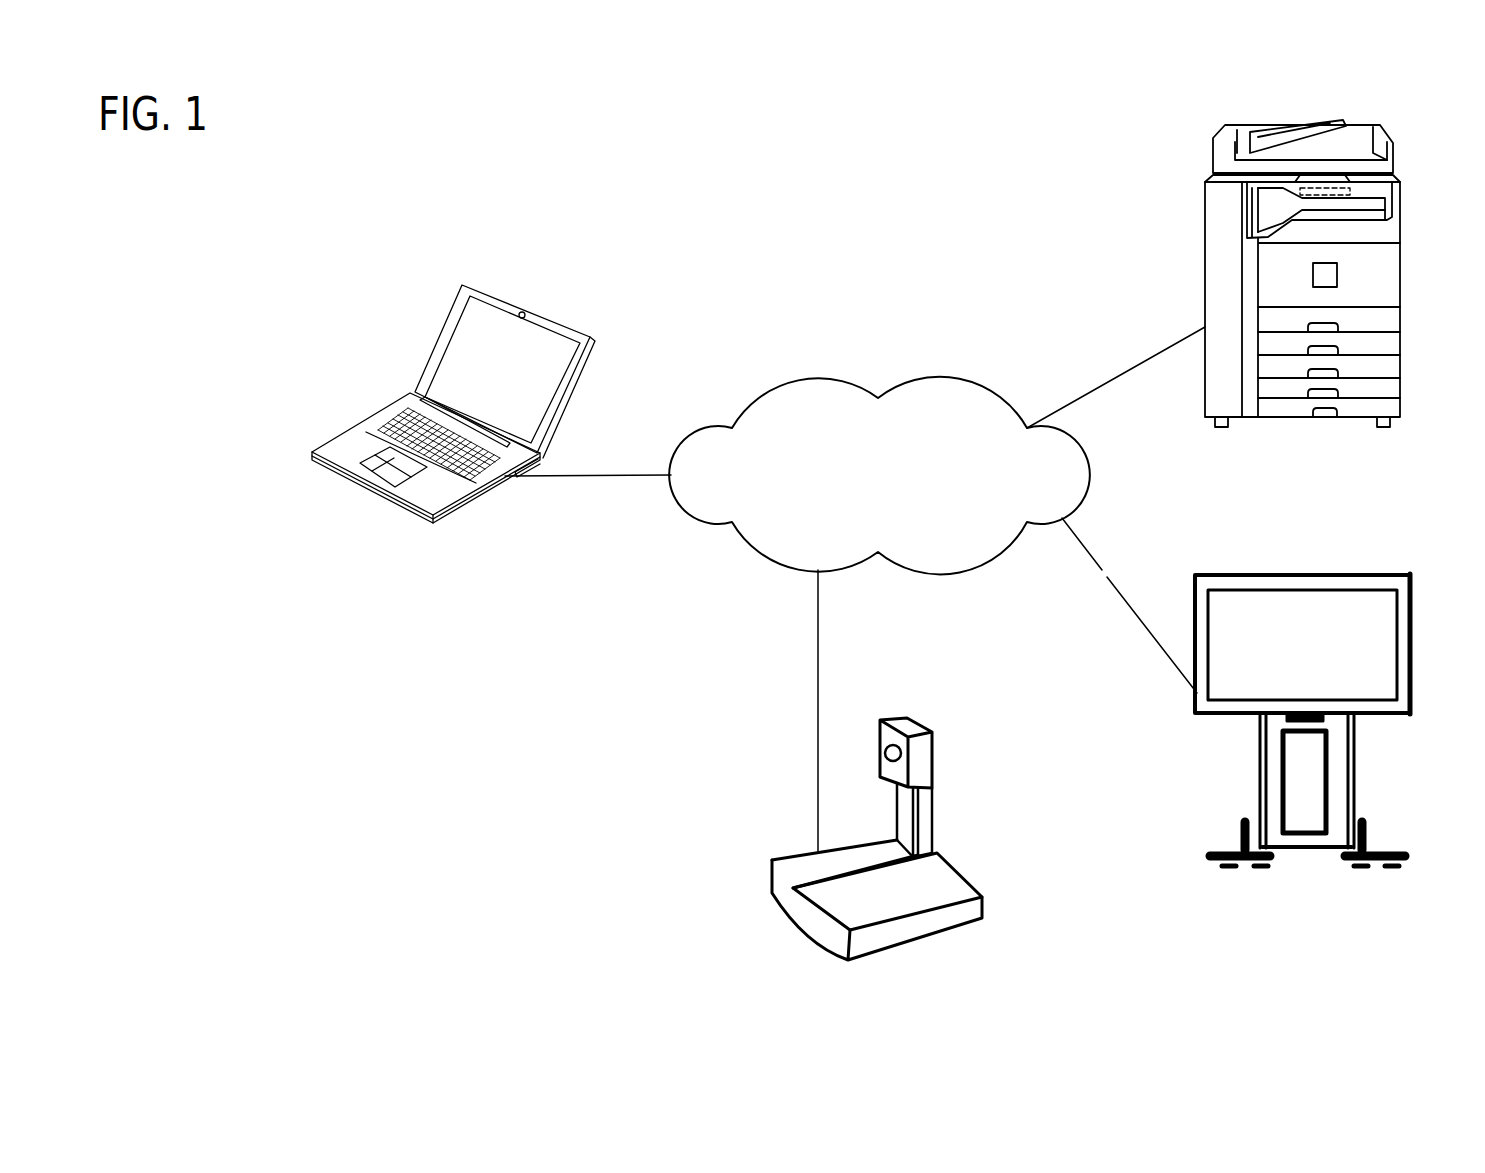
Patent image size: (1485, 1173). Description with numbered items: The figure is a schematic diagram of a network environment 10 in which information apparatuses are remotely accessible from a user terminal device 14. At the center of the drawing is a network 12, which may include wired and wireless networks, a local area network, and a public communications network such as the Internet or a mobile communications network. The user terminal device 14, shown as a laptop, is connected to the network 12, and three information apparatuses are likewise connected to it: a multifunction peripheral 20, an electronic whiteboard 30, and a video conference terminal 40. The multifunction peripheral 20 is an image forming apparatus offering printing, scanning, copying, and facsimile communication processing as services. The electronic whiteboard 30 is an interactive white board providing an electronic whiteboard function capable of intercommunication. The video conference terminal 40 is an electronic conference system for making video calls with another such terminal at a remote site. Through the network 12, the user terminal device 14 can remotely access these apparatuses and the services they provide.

The network environment 10 is at (303, 173).
The network 12 is at (957, 380).
The user terminal device 14 is at (452, 510).
The multifunction peripheral 20 is at (1398, 310).
The electronic whiteboard 30 is at (1413, 655).
The video conference terminal 40 is at (983, 905).